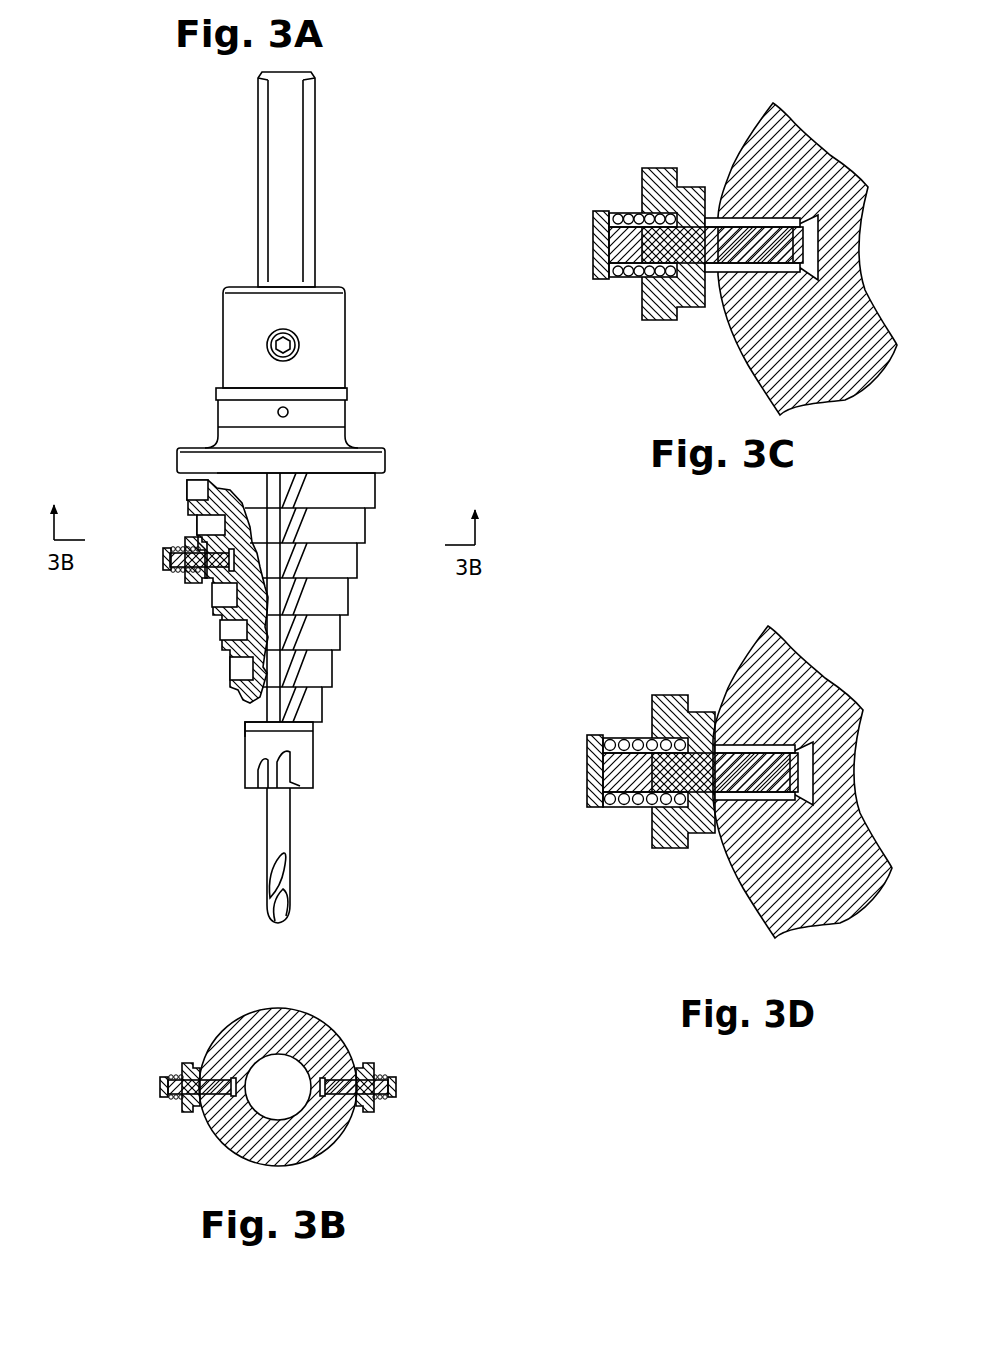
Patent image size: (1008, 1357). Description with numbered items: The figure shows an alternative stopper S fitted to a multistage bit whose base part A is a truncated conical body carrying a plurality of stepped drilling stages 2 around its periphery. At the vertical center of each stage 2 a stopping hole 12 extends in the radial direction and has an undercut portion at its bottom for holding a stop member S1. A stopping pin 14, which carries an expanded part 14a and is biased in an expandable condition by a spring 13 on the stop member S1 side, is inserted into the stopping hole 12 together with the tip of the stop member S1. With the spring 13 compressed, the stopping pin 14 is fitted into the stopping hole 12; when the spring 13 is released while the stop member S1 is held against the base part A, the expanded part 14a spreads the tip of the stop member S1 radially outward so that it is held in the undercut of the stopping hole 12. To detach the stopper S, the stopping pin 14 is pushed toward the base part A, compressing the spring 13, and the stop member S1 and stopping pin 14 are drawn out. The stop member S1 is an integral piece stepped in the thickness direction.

In FIG. 3A, the drilling stage 2 is at (358, 558).
In FIG. 3A, the base part A is at (340, 530).
In FIG. 3B, the base part A is at (310, 1015).
In FIG. 3A, the stopping hole 12 is at (199, 525).
In FIG. 3C, the stopping hole 12 is at (810, 247).
In FIG. 3A, the spring 13 is at (179, 574).
In FIG. 3B, the spring 13 is at (380, 1074).
In FIG. 3C, the spring 13 is at (623, 212).
In FIG. 3D, the spring 13 is at (622, 805).
In FIG. 3A, the stopping pin 14 is at (166, 558).
In FIG. 3B, the stopping pin 14 is at (397, 1090).
In FIG. 3C, the stopping pin 14 is at (747, 250).
In FIG. 3D, the stopping pin 14 is at (755, 770).
In FIG. 3D, the expanded part 14a is at (797, 763).
In FIG. 3A, the stopper S is at (162, 573).
In FIG. 3B, the stopper S is at (177, 1100).
In FIG. 3A, the stop member S1 is at (190, 584).
In FIG. 3B, the stop member S1 is at (190, 1063).
In FIG. 3C, the stop member S1 is at (658, 183).
In FIG. 3D, the stop member S1 is at (672, 702).